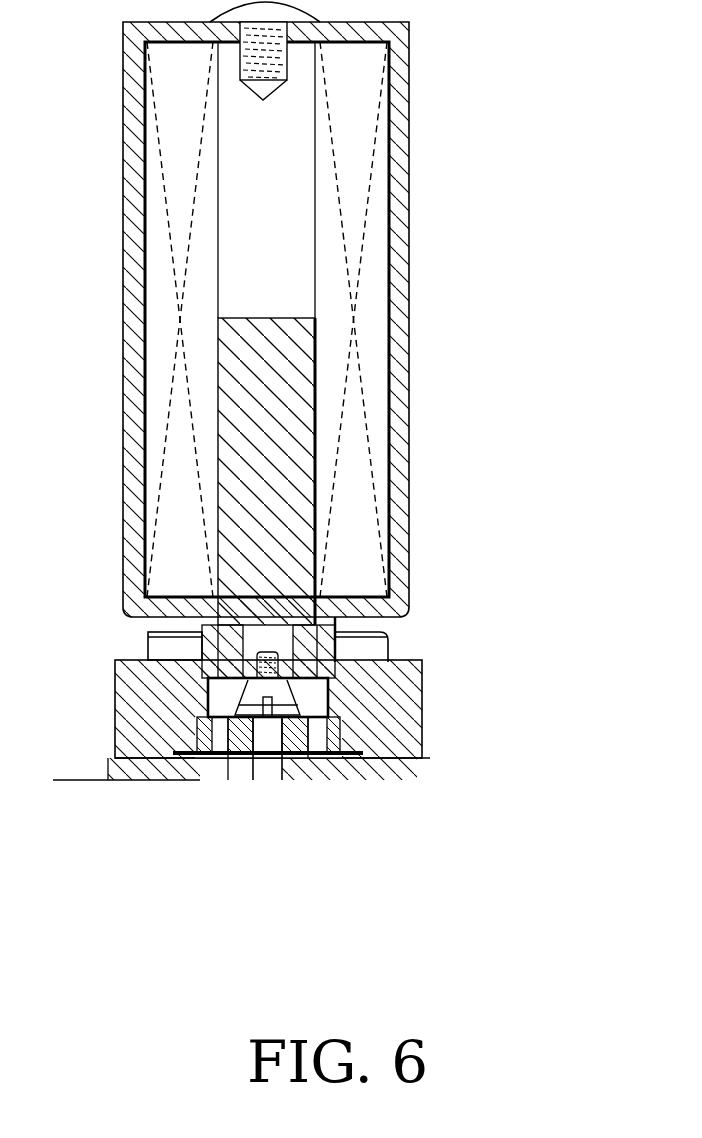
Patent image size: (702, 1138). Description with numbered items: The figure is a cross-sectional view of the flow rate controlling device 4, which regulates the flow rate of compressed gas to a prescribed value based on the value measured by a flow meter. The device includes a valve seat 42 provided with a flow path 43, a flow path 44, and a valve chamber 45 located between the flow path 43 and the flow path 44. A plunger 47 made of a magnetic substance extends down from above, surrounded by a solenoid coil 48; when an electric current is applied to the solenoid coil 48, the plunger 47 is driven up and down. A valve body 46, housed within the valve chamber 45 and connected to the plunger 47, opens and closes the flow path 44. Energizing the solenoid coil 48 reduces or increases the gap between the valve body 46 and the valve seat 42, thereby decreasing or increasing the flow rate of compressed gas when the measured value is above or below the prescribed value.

The flow rate controlling device 4 is at (309, 461).
The valve seat 42 is at (440, 737).
The flow path 43 is at (432, 752).
The flow path 44 is at (263, 757).
The valve chamber 45 is at (386, 655).
The valve body 46 is at (330, 716).
The plunger 47 is at (302, 500).
The solenoid coil 48 is at (410, 302).